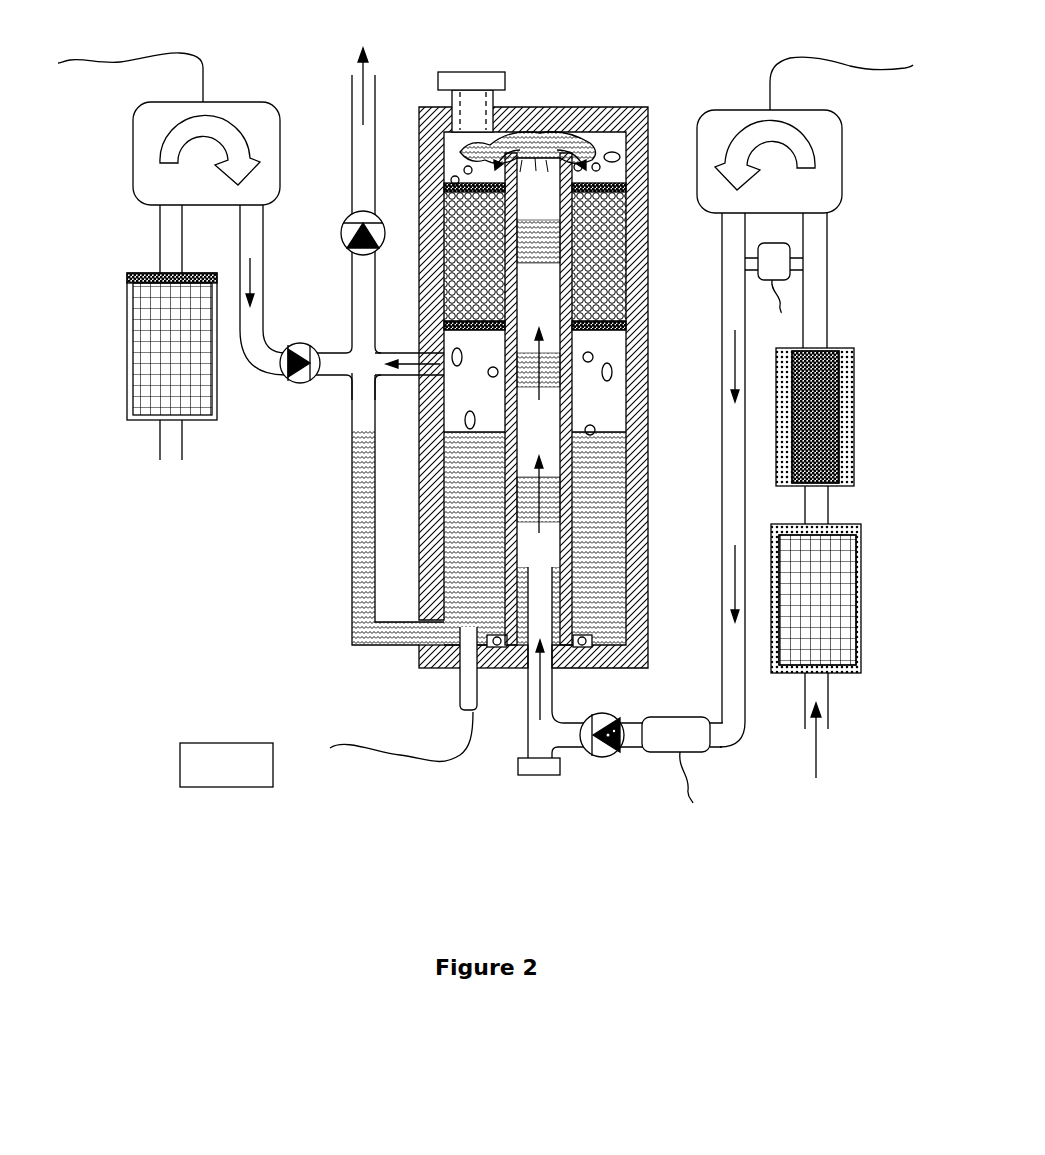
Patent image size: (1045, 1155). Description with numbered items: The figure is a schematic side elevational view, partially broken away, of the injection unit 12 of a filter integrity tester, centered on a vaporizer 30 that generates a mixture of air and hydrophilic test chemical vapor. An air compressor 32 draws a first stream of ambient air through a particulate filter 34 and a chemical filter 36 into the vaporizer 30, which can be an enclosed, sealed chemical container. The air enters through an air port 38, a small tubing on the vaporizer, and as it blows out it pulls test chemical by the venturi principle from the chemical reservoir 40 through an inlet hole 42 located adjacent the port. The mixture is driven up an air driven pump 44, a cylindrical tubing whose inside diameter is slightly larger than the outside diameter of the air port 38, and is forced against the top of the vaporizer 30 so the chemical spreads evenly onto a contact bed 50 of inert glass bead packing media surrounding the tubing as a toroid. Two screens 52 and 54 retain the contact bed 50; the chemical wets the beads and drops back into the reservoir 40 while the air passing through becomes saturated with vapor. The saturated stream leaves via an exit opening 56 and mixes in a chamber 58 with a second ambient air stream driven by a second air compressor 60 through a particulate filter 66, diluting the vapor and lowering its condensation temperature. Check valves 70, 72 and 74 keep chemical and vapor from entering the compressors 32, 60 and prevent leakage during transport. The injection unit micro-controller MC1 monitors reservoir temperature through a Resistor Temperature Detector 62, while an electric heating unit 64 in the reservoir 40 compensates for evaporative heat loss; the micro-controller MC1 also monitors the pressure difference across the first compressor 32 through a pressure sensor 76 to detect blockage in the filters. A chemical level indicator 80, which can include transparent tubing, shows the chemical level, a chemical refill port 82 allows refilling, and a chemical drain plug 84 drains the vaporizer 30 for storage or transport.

The injection unit 12 is at (305, 479).
The vaporizer 30 is at (625, 112).
The air compressor 32 is at (827, 145).
The particulate filter 34 is at (822, 611).
The chemical filter 36 is at (818, 426).
The air port 38 is at (543, 573).
The chemical reservoir 40 is at (420, 620).
The inlet hole 42 is at (618, 617).
The air driven pump 44 is at (563, 512).
The contact bed 50 is at (452, 177).
The screen 52 is at (640, 313).
The screen 54 is at (613, 190).
The exit opening 56 is at (450, 365).
The chamber 58 is at (355, 367).
The second air compressor 60 is at (143, 160).
The Resistor Temperature Detector 62 is at (467, 683).
The electric heating unit 64 is at (587, 640).
The particulate filter 66 is at (143, 348).
The check valve 70 is at (352, 250).
The check valve 72 is at (292, 380).
The check valve 74 is at (597, 757).
The pressure sensor 76 is at (778, 262).
The chemical level indicator 80 is at (353, 553).
The chemical refill port 82 is at (472, 77).
The chemical drain plug 84 is at (527, 775).
The injection unit micro-controller MC1 is at (217, 767).